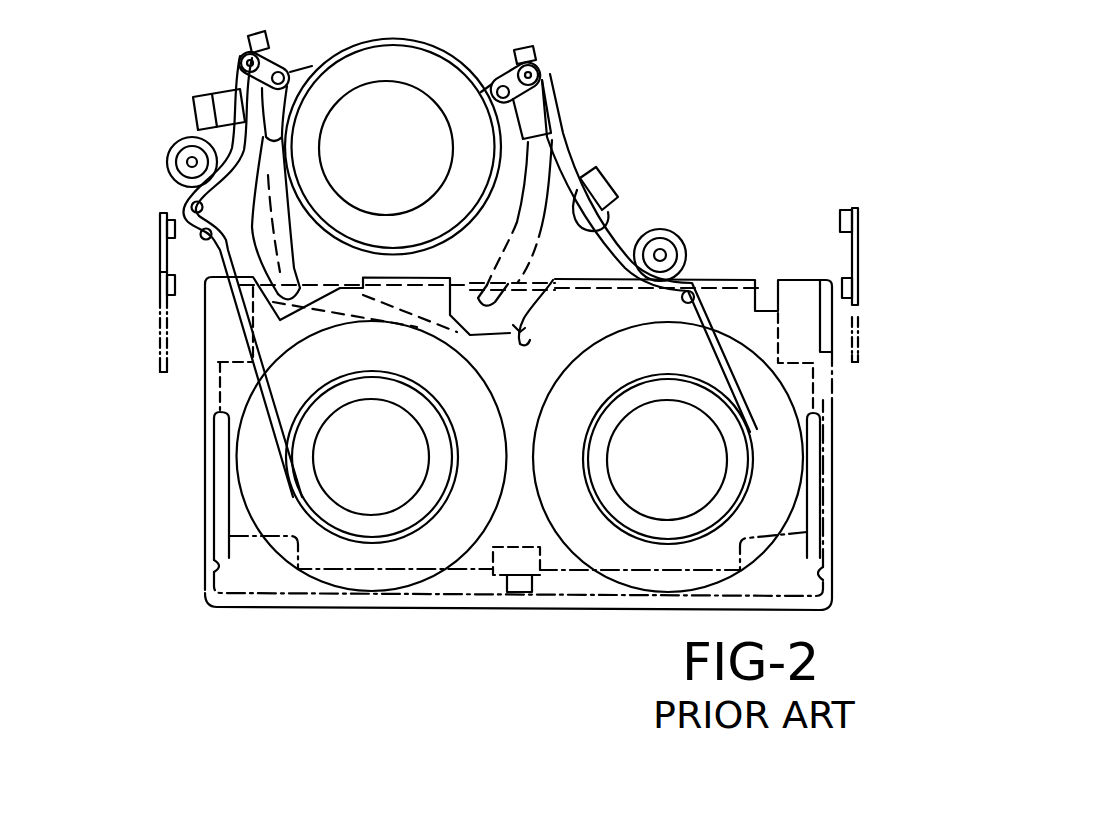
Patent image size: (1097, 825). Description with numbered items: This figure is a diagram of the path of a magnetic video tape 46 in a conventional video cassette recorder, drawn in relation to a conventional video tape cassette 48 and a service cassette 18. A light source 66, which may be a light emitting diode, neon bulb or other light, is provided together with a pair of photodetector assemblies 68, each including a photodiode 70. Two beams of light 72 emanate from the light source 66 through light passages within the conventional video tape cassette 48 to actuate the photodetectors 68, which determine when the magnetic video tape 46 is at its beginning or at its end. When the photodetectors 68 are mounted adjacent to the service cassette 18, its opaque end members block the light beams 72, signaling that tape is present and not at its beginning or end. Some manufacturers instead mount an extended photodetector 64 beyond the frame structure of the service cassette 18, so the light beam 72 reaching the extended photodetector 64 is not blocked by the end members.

The service cassette 18 is at (451, 576).
The magnetic video tape 46 is at (268, 415).
The conventional video tape cassette 48 is at (205, 582).
The extended photodetector 64 is at (160, 233).
The light source 66 is at (520, 322).
The photodetector assembly 68 is at (160, 357).
The photodiode 70 is at (182, 215).
The light beam 72 is at (362, 288).